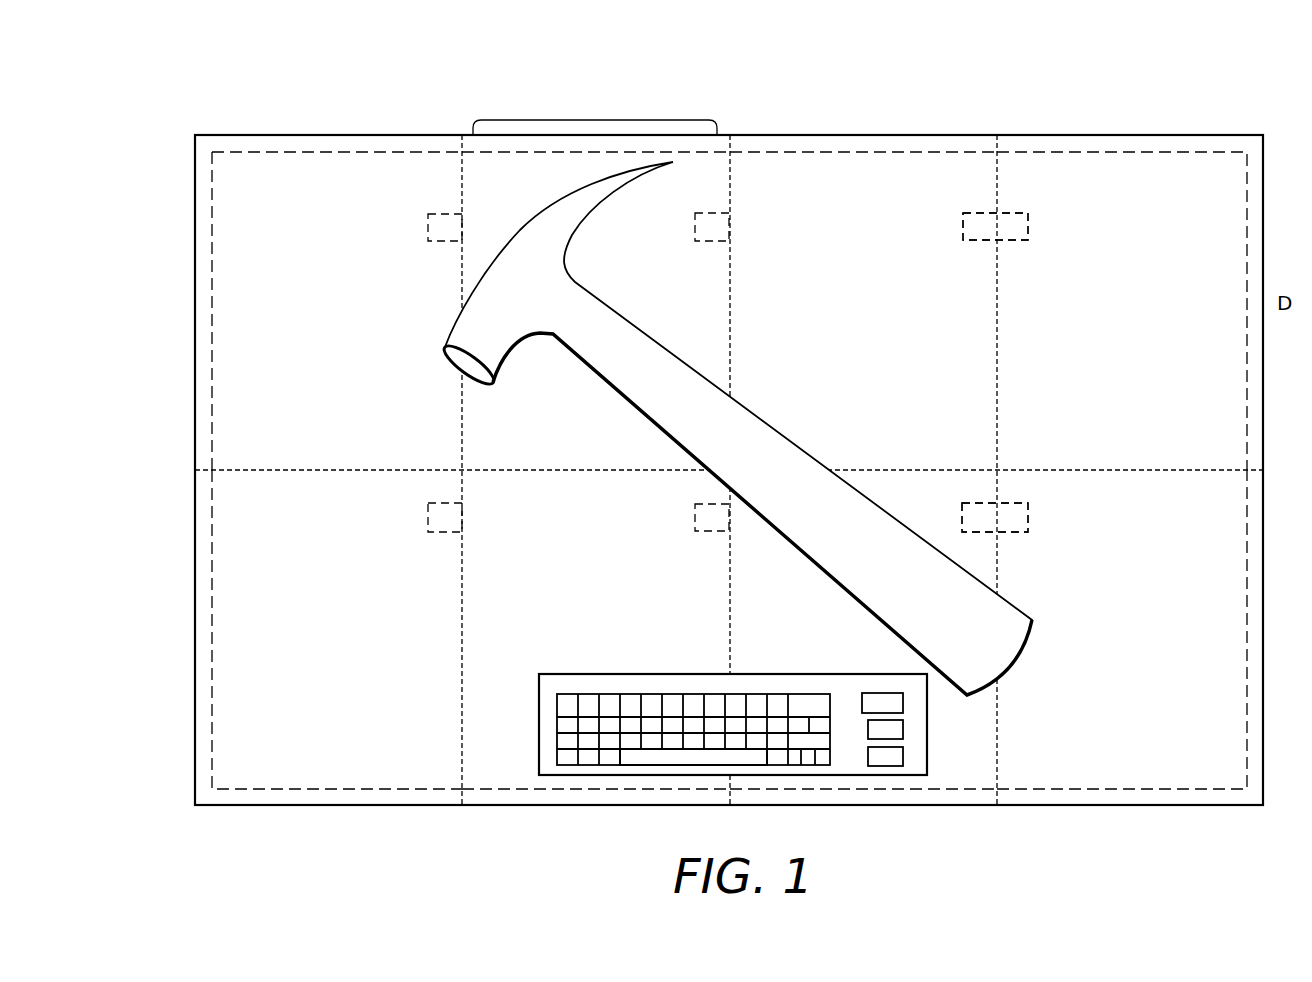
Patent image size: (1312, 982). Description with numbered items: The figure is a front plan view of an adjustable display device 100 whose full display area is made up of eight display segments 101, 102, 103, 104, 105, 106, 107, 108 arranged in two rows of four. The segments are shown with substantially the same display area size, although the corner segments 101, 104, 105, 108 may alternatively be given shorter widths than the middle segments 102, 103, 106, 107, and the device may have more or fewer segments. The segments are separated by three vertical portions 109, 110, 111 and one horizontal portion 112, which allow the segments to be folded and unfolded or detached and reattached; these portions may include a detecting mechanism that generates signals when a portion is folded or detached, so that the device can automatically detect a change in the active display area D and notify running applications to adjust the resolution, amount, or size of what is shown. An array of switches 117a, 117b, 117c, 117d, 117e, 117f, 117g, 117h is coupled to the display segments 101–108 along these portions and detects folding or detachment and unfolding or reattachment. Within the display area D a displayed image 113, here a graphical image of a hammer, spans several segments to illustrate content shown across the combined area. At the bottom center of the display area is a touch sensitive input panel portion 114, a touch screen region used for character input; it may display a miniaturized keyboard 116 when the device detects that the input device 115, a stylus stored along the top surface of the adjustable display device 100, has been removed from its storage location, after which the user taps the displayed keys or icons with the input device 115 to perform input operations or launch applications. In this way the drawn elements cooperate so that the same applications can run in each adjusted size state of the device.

The adjustable display device 100 is at (255, 86).
The display segment 101 is at (322, 168).
The display segment 102 is at (713, 160).
The display segment 103 is at (905, 160).
The display segment 104 is at (1180, 158).
The display segment 105 is at (270, 775).
The display segment 106 is at (492, 775).
The display segment 107 is at (972, 775).
The display segment 108 is at (1193, 775).
The vertical portion 109 is at (460, 288).
The vertical portion 110 is at (730, 332).
The vertical portion 111 is at (997, 327).
The horizontal portion 112 is at (238, 475).
The displayed image 113 is at (1010, 605).
The touch sensitive input panel portion 114 is at (819, 774).
The input device 115 is at (548, 118).
The miniaturized keyboard 116 is at (627, 765).
The switch 117a is at (427, 228).
The switch 117b is at (695, 228).
The switch 117c is at (962, 228).
The switch 117d is at (1029, 228).
The switch 117e is at (427, 518).
The switch 117f is at (695, 518).
The switch 117g is at (962, 518).
The switch 117h is at (1029, 518).